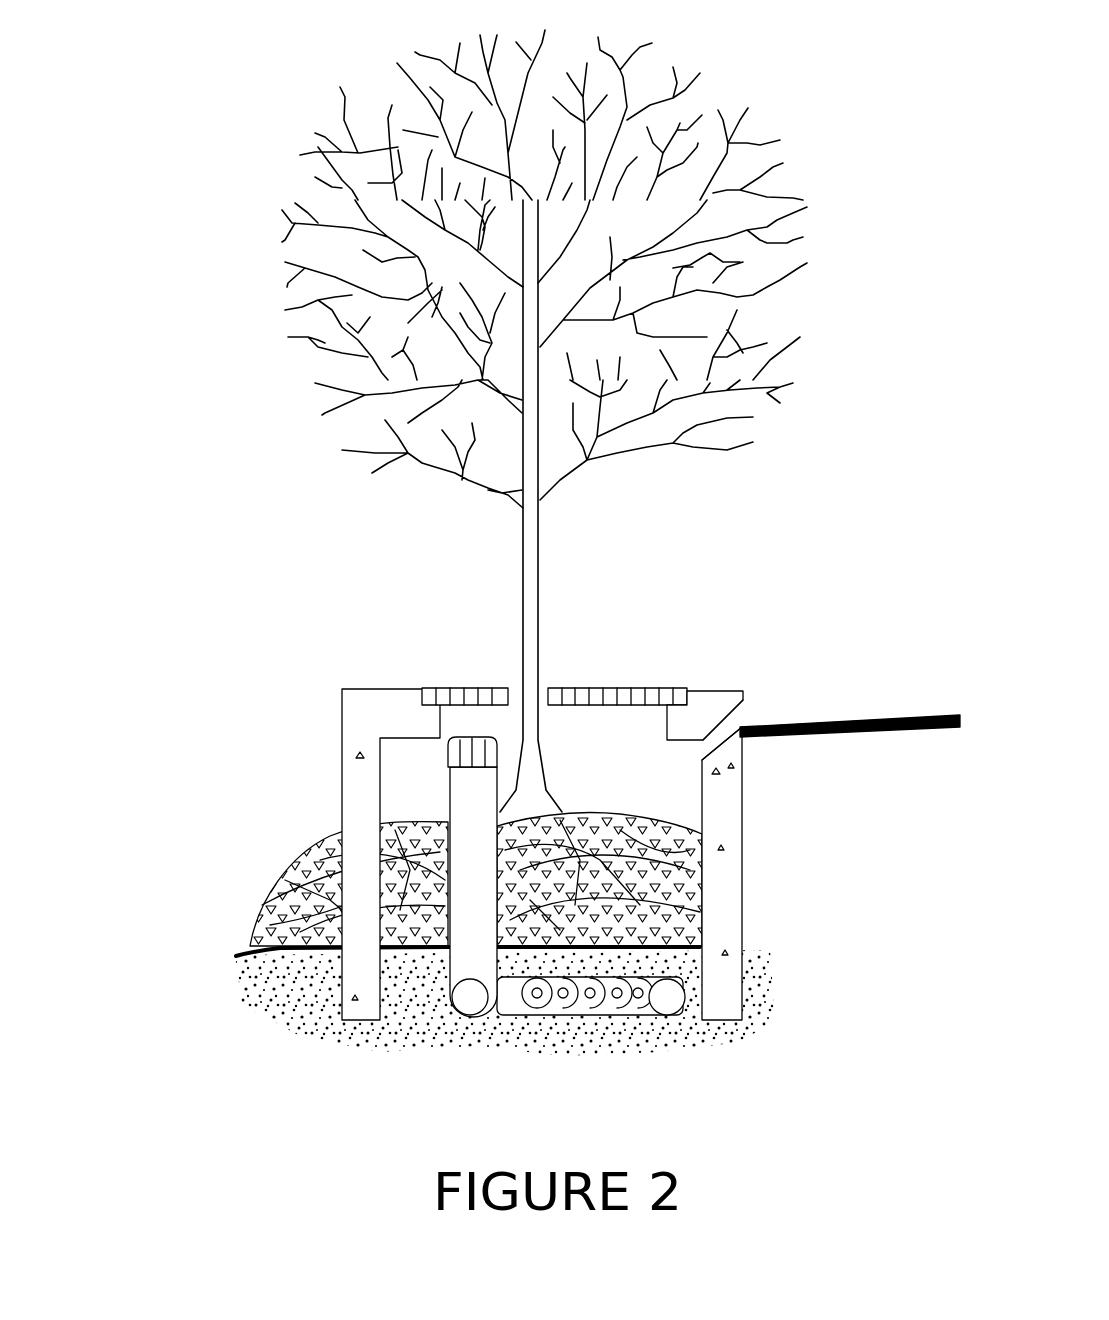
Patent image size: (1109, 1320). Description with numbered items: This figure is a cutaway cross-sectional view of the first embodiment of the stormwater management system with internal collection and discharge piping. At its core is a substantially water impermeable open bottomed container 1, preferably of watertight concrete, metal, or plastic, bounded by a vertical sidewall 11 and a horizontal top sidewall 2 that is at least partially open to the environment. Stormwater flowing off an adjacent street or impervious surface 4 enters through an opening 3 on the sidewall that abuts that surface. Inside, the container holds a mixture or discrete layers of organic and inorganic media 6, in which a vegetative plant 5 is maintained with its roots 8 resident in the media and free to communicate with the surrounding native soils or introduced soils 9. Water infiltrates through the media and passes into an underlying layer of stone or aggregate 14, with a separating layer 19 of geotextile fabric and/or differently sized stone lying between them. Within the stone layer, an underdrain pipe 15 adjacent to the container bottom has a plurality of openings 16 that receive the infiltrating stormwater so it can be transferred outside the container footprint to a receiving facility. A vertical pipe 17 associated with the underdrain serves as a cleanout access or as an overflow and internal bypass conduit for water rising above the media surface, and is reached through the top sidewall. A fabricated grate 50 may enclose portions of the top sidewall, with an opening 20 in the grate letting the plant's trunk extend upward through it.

The open bottomed container 1 is at (774, 918).
The top sidewall 2 is at (764, 631).
The opening 3 is at (808, 694).
The impervious surface 4 is at (865, 761).
The vegetative plant 5 is at (437, 421).
The media 6 is at (655, 880).
The roots 8 is at (288, 869).
The native soils or introduced soils 9 is at (391, 1093).
The vertical sidewall 11 is at (320, 854).
The stone or aggregate layer 14 is at (448, 1007).
The underdrain pipe 15 is at (590, 1053).
The openings 16 is at (673, 1052).
The vertical pipe 17 is at (367, 829).
The separating layer 19 is at (402, 971).
The opening 20 is at (617, 628).
The grate 50 is at (407, 639).